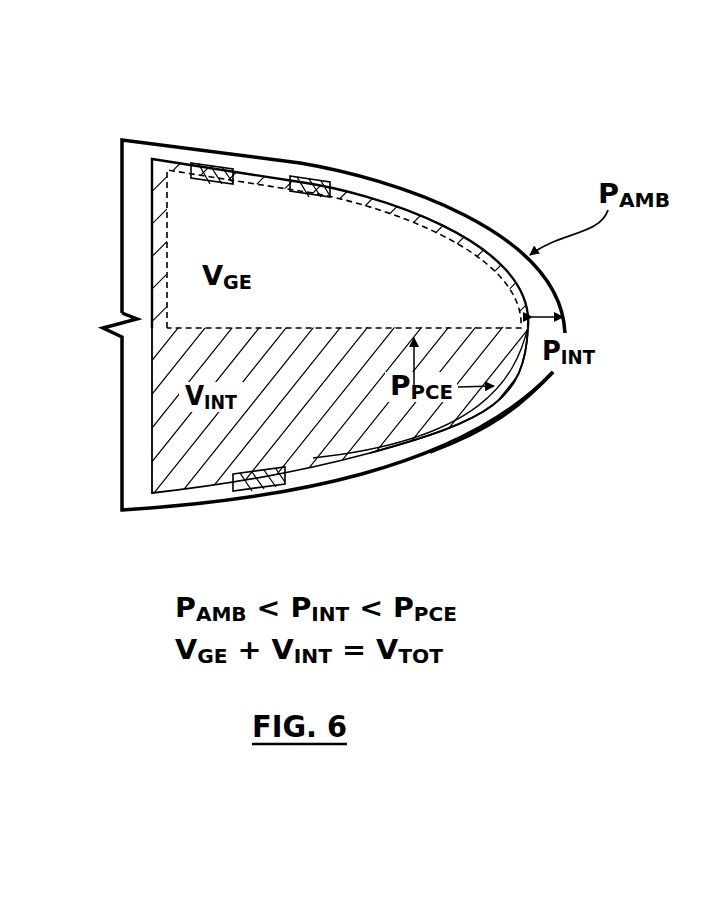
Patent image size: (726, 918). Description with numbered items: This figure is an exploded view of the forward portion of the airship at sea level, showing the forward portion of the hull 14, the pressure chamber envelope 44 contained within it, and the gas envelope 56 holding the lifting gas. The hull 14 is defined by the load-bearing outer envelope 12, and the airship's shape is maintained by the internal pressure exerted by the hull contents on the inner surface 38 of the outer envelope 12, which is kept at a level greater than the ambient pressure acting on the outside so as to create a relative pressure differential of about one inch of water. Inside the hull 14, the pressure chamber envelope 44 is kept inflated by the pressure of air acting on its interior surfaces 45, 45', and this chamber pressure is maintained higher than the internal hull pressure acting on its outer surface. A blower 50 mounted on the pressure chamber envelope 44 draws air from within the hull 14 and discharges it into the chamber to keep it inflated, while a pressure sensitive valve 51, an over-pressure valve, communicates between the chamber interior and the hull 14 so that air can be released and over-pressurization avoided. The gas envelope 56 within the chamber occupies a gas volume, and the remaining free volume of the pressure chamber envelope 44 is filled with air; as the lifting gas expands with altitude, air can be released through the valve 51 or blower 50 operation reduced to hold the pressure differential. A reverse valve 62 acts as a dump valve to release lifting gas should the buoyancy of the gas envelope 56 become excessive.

The outer envelope 12 is at (557, 288).
The hull 14 is at (549, 405).
The inner surface of the outer envelope 38 is at (318, 472).
The pressure chamber envelope 44 is at (358, 194).
The interior surface of pressure chamber envelope 45 is at (420, 435).
The inner ply lower portion 45' is at (449, 422).
The blower 50 is at (260, 492).
The pressure sensitive valve 51 is at (317, 175).
The gas envelope 56 is at (453, 217).
The reverse valve 62 is at (218, 168).